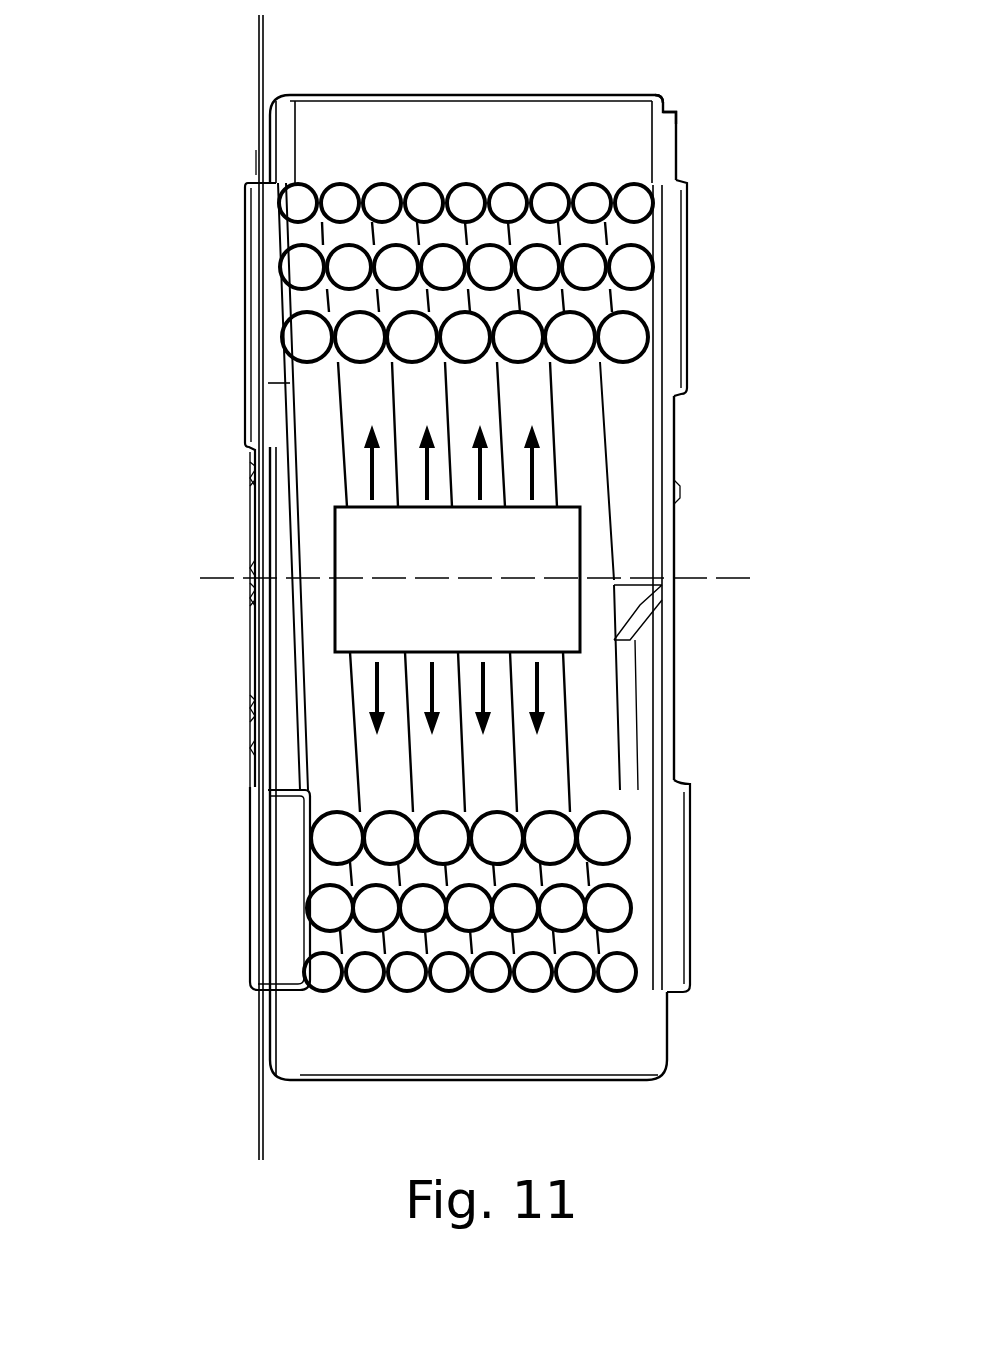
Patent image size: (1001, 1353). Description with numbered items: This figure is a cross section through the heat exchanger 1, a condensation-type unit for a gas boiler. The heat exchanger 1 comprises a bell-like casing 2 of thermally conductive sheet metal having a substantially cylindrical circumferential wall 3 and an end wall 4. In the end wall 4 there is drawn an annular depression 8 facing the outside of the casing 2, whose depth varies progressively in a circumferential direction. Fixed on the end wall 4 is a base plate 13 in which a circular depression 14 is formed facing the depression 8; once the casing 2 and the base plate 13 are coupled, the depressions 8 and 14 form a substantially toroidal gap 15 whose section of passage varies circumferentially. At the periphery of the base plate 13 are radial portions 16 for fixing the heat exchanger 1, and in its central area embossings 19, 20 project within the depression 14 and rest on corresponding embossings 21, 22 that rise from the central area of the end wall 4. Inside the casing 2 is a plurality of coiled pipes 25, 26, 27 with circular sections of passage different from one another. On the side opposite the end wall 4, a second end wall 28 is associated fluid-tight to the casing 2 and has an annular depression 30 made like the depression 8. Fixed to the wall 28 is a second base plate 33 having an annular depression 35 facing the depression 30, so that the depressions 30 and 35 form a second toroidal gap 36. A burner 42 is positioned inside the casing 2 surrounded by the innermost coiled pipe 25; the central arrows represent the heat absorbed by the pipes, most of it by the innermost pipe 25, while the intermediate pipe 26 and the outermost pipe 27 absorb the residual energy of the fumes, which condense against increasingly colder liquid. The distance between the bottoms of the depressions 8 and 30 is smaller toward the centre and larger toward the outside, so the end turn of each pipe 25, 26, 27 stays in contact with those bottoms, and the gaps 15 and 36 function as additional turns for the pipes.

The heat exchanger 1 is at (681, 52).
The casing 2 is at (437, 88).
The circumferential wall 3 is at (553, 95).
The end wall 4 is at (268, 152).
The annular depression 8 is at (288, 380).
The base plate 13 is at (254, 160).
The circular depression 14 is at (248, 207).
The gap 15 is at (256, 297).
The radial portions 16 is at (258, 30).
The embossing 19 is at (176, 587).
The embossing 20 is at (453, 558).
The embossing 21 is at (254, 472).
The embossing 22 is at (252, 590).
The innermost coiled pipe 25 is at (553, 868).
The intermediate coiled pipe 26 is at (481, 935).
The outermost coiled pipe 27 is at (411, 994).
The second end wall 28 is at (674, 122).
The annular depression 30 is at (656, 380).
The second base plate 33 is at (688, 425).
The annular depression 35 is at (690, 205).
The gap 36 is at (688, 305).
The burner 42 is at (457, 579).